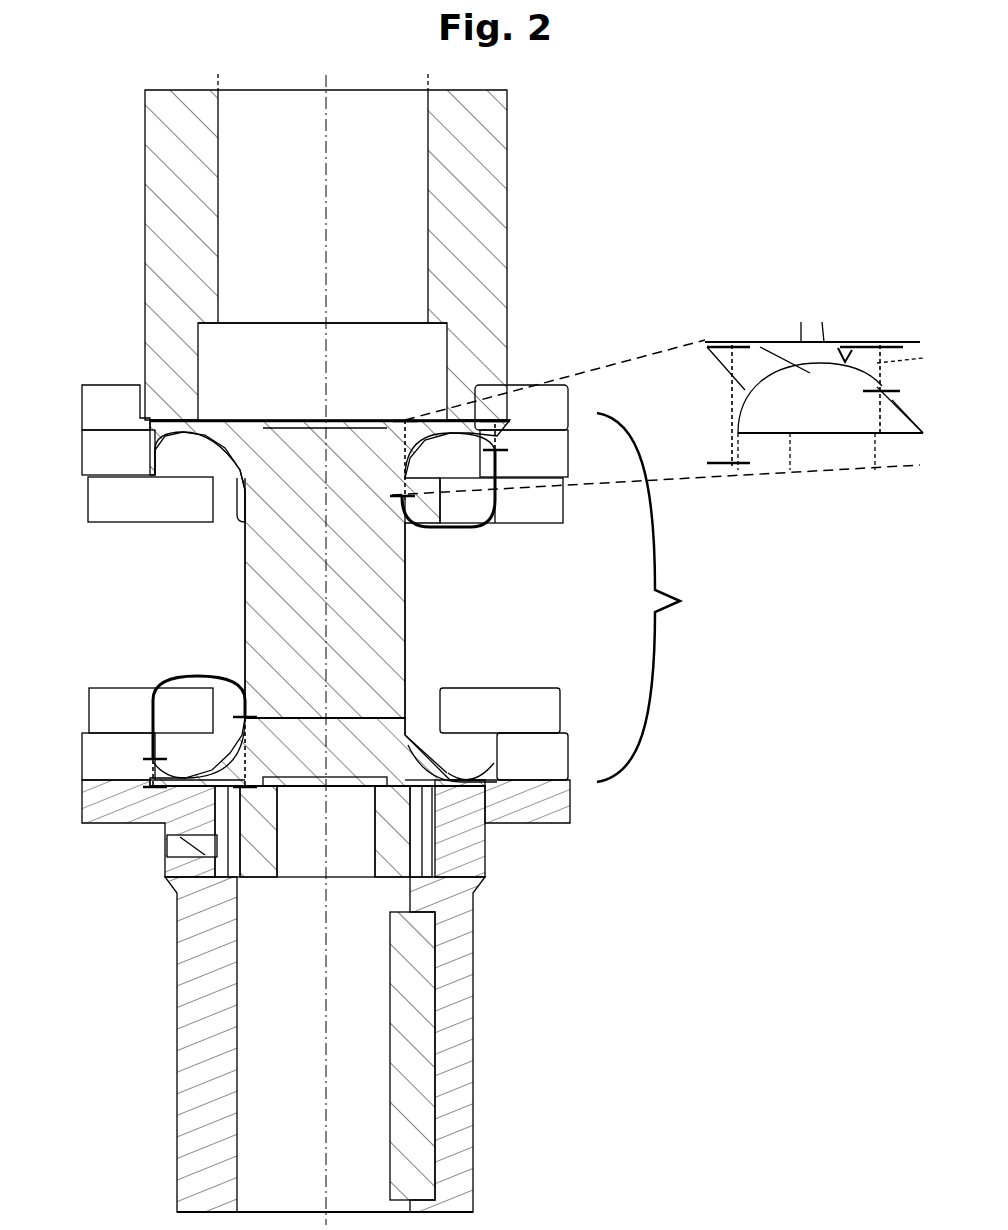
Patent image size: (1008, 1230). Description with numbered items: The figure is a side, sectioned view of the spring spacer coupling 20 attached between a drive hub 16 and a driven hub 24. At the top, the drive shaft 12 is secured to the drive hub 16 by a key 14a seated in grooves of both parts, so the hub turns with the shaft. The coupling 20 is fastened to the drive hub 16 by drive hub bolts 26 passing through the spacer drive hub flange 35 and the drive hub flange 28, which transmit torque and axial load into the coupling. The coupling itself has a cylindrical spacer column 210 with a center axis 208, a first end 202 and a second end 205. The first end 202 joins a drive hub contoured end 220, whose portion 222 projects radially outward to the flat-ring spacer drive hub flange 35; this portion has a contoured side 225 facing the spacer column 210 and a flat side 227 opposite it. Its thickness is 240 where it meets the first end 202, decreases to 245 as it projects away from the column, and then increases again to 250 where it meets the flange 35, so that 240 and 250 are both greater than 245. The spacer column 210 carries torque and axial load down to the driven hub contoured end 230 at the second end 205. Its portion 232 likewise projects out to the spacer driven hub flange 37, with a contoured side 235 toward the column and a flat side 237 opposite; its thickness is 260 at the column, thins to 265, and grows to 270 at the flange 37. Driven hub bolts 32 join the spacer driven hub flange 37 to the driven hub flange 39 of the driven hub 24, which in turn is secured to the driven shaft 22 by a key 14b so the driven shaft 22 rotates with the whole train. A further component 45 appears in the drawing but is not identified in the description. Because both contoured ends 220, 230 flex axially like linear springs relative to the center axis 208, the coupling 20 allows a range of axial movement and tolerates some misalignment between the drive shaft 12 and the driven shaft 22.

The drive shaft 12 is at (373, 150).
The key 14a is at (437, 263).
The drive hub 16 is at (508, 328).
The flat side 227 is at (172, 416).
The drive hub flange 28 is at (103, 413).
The spacer drive hub flange 35 is at (110, 455).
The drive hub bolts 26 is at (105, 510).
The contoured side 225 is at (180, 440).
The drive hub contoured end 220 is at (246, 446).
The center axis 208 is at (327, 613).
The first end 202 is at (362, 497).
The thickness 240 is at (402, 459).
The thickness 245 is at (473, 428).
The thickness 250 is at (500, 437).
The portion 222 is at (450, 530).
The spacer column 210 is at (406, 610).
The driven hub contoured end 230 is at (404, 758).
The spring spacer coupling 20 is at (664, 597).
The portion 232 is at (197, 672).
The second end 205 is at (300, 716).
The contoured side 235 is at (459, 771).
The driven hub bolts 32 is at (103, 708).
The spacer driven hub flange 37 is at (100, 748).
The thickness 270 is at (150, 777).
The thickness 260 is at (250, 760).
The thickness 265 is at (176, 783).
The driven hub flange 39 is at (542, 805).
The flat side 237 is at (480, 789).
The bore insert 45 is at (362, 843).
The driven shaft 22 is at (362, 1024).
The driven hub 24 is at (205, 1078).
The key 14b is at (418, 1113).